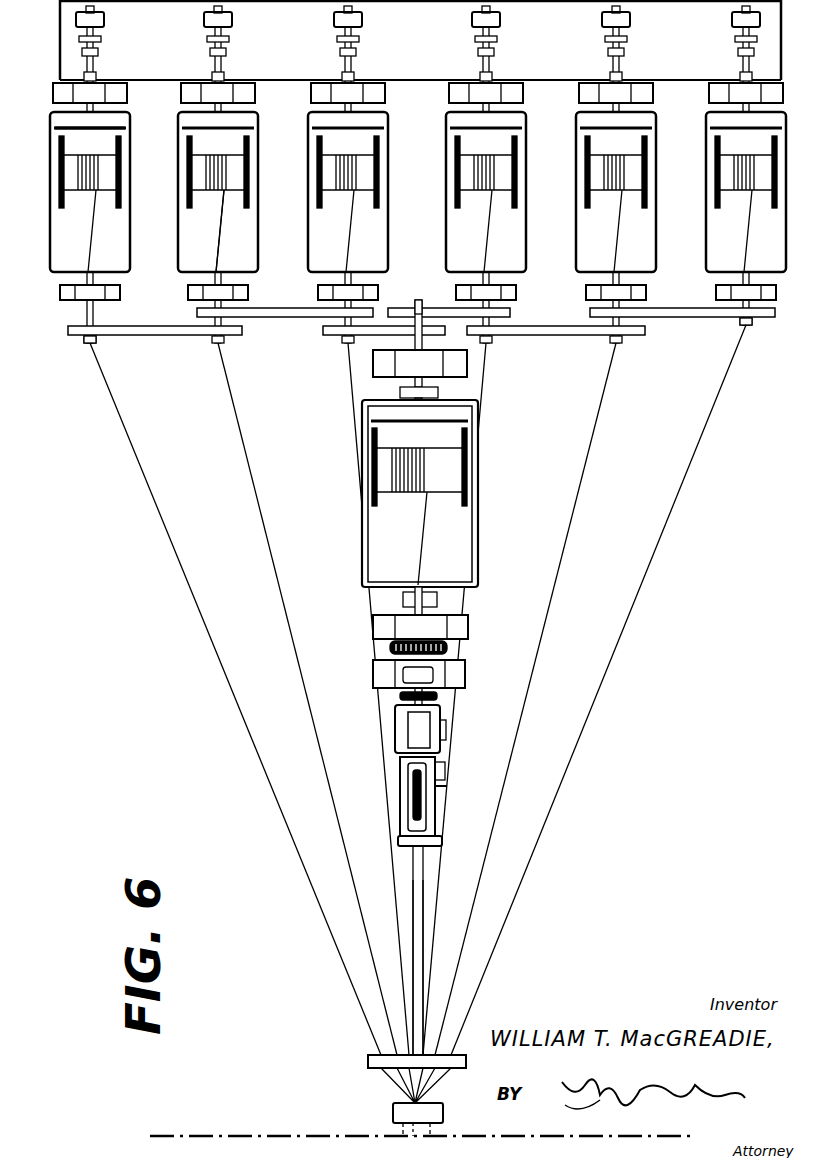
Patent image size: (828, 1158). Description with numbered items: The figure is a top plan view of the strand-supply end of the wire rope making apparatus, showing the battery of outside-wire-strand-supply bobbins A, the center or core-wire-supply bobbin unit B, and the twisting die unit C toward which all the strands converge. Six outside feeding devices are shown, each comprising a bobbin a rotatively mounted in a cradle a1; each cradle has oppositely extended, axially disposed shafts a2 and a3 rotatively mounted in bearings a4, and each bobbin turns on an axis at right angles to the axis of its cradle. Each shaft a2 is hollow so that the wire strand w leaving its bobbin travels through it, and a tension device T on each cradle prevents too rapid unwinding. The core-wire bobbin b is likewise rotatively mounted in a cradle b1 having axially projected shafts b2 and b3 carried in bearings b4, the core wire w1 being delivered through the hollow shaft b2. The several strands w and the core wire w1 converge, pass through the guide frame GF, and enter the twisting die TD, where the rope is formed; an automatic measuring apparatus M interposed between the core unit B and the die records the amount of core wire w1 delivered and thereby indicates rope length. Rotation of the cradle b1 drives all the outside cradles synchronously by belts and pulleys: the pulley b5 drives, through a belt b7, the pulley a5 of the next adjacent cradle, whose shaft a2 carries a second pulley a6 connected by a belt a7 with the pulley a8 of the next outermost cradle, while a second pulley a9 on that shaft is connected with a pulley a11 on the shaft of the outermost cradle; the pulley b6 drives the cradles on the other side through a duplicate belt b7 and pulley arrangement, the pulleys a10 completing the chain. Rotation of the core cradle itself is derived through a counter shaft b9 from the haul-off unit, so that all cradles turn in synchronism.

The outside-wire-strand-supply bobbins A is at (70, 170).
The tension device T is at (128, 127).
The wire strand w is at (93, 236).
The bobbin a is at (370, 175).
The cradle a1 is at (179, 211).
The shaft a2 is at (97, 325).
The shaft a3 is at (85, 75).
The bearings a4 is at (318, 85).
The pulley a5 is at (322, 330).
The second pulley a6 is at (468, 336).
The belt a7 is at (228, 226).
The pulley a8 is at (195, 312).
The second pulley a9 is at (210, 336).
The connecting rail a10 is at (160, 336).
The pulley a11 is at (91, 341).
The core-wire-supply bobbin unit B is at (426, 727).
The core-wire bobbin b is at (455, 470).
The cradle b1 is at (356, 556).
The shaft b2 is at (437, 600).
The shaft b3 is at (440, 380).
The bearings b4 is at (380, 368).
The pulley b5 is at (462, 306).
The pulley b6 is at (402, 300).
The belt b7 is at (380, 338).
The counter shaft b9 is at (427, 890).
The wire strand w1 is at (420, 568).
The automatic measuring apparatus M is at (393, 763).
The guide frame GF is at (370, 1058).
The twisting die unit C is at (393, 1112).
The twisting die TD is at (440, 1127).